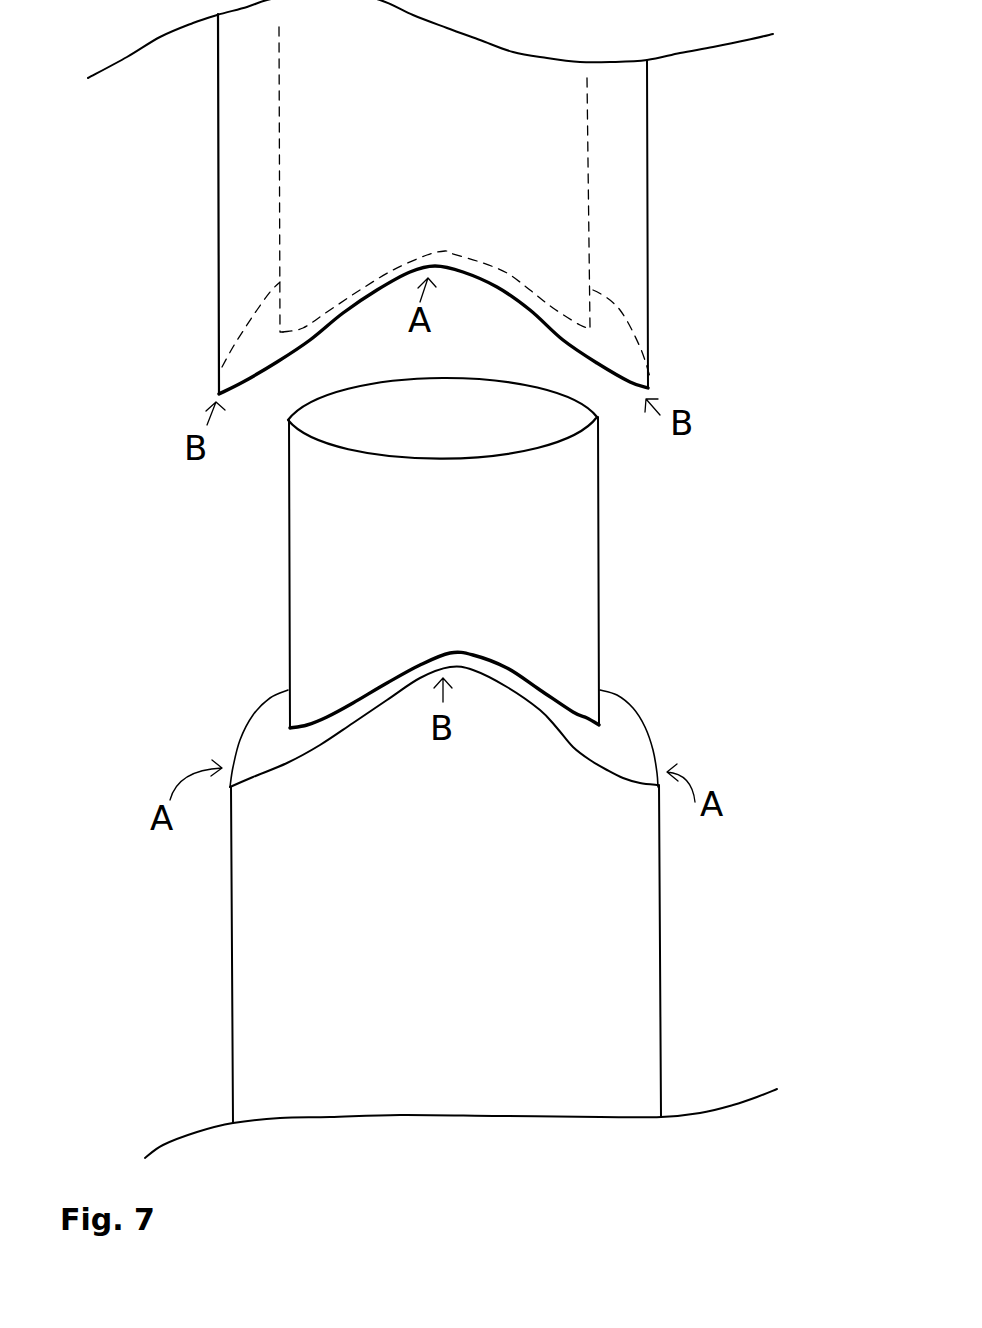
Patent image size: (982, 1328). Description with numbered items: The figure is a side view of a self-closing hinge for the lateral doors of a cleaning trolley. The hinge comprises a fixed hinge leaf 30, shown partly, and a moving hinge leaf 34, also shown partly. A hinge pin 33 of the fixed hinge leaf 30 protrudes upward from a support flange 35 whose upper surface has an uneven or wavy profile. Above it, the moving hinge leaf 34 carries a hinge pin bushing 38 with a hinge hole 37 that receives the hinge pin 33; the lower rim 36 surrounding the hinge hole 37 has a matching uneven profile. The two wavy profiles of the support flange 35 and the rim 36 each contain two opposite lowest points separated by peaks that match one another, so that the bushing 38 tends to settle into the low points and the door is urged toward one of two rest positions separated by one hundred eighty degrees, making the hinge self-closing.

The fixed hinge leaf 30 is at (475, 912).
The hinge pin 33 is at (575, 510).
The moving hinge leaf 34 is at (435, 204).
The support flange 35 is at (617, 743).
The rim 36 is at (605, 343).
The hinge hole 37 is at (436, 202).
The hinge pin bushing 38 is at (218, 205).